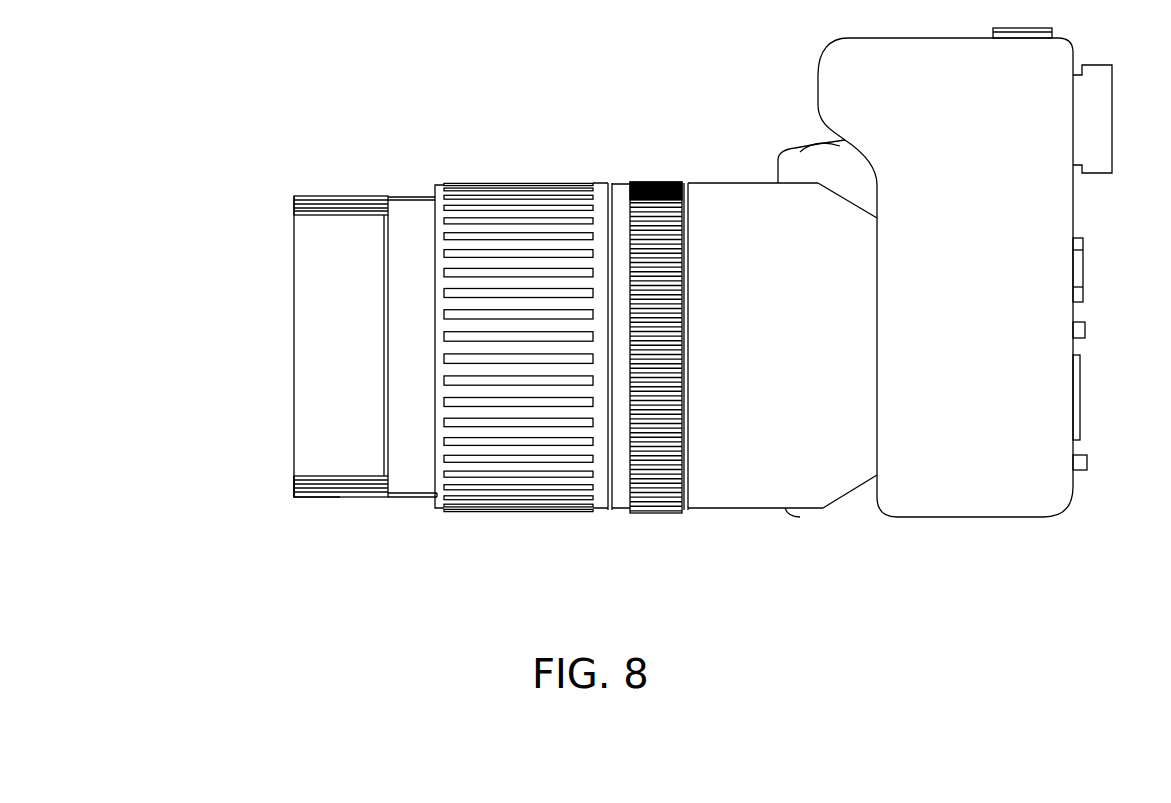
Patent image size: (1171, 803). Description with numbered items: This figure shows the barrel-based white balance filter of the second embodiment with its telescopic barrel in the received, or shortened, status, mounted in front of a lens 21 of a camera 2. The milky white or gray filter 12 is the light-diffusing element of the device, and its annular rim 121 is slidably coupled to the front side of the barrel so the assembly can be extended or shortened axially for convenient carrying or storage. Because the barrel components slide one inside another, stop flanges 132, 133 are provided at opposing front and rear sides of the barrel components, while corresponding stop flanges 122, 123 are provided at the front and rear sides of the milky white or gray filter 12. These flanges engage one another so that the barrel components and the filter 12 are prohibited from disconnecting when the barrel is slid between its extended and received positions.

The camera body 2 is at (1043, 225).
The milky white or gray filter 12 is at (323, 353).
The lens 21 is at (548, 200).
The annular rim 121 is at (330, 478).
The stop flange 122 is at (390, 208).
The stop flange 123 is at (296, 482).
The stop flange 132 is at (387, 211).
The stop flange 133 is at (294, 212).